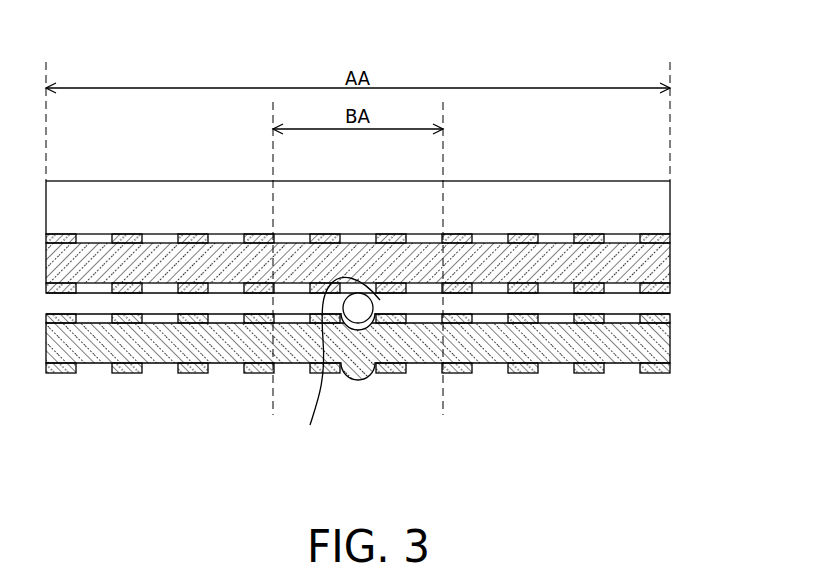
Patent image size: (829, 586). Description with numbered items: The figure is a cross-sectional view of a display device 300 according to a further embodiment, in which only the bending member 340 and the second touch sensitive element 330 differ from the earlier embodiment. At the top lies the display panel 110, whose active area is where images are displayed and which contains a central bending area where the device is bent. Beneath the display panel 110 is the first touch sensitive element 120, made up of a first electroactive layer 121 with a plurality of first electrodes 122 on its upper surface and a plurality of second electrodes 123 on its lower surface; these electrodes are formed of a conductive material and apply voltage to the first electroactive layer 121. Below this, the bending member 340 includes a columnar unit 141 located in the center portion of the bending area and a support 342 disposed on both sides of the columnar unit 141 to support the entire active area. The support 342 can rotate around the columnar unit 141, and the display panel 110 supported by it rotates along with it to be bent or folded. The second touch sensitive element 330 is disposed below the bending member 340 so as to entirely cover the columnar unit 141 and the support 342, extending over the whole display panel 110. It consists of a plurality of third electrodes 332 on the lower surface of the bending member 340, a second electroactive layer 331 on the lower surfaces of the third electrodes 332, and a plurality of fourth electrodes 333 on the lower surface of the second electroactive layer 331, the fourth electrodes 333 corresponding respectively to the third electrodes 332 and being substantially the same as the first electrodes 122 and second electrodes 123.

The display device 300 is at (410, 253).
The display panel 110 is at (655, 206).
The first touch sensitive element 120 is at (410, 263).
The first electroactive layer 121 is at (655, 262).
The first electrodes 122 is at (655, 240).
The second electrodes 123 is at (655, 290).
The second touch sensitive element 330 is at (410, 343).
The second electroactive layer 331 is at (655, 343).
The third electrodes 332 is at (655, 320).
The fourth electrodes 333 is at (655, 370).
The bending member 340 is at (331, 385).
The columnar unit 141 is at (362, 310).
The support 342 is at (300, 303).